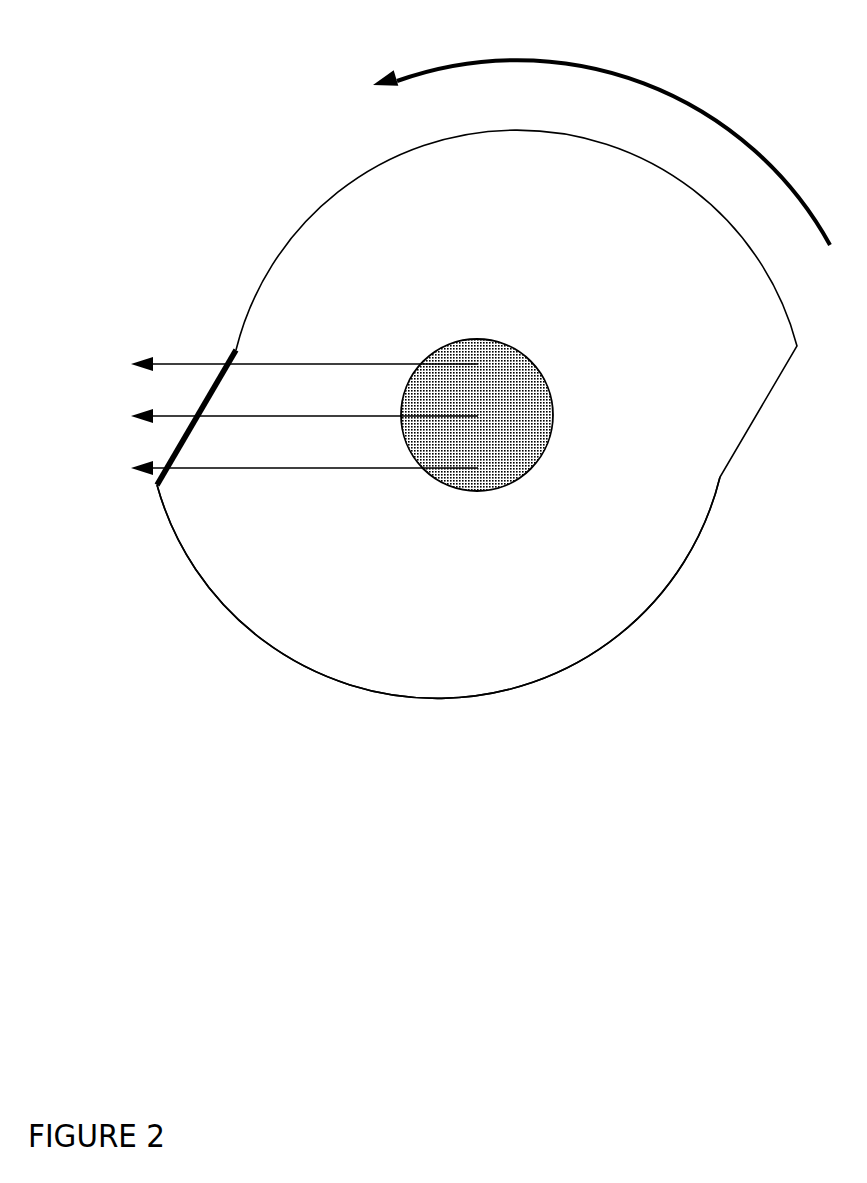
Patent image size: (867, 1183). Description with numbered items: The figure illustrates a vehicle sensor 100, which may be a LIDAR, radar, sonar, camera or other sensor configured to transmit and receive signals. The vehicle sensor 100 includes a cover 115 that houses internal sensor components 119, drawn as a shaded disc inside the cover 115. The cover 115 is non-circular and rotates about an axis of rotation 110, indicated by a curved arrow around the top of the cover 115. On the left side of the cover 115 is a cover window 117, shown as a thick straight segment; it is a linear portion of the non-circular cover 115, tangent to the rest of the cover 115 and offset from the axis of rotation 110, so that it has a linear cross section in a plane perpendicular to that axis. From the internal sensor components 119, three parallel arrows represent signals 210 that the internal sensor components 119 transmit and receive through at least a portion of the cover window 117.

The vehicle sensor 100 is at (312, 613).
The axis of rotation 110 is at (408, 74).
The cover 115 is at (347, 688).
The cover window 117 is at (231, 359).
The internal sensor components 119 is at (457, 488).
The signals 210 is at (276, 469).